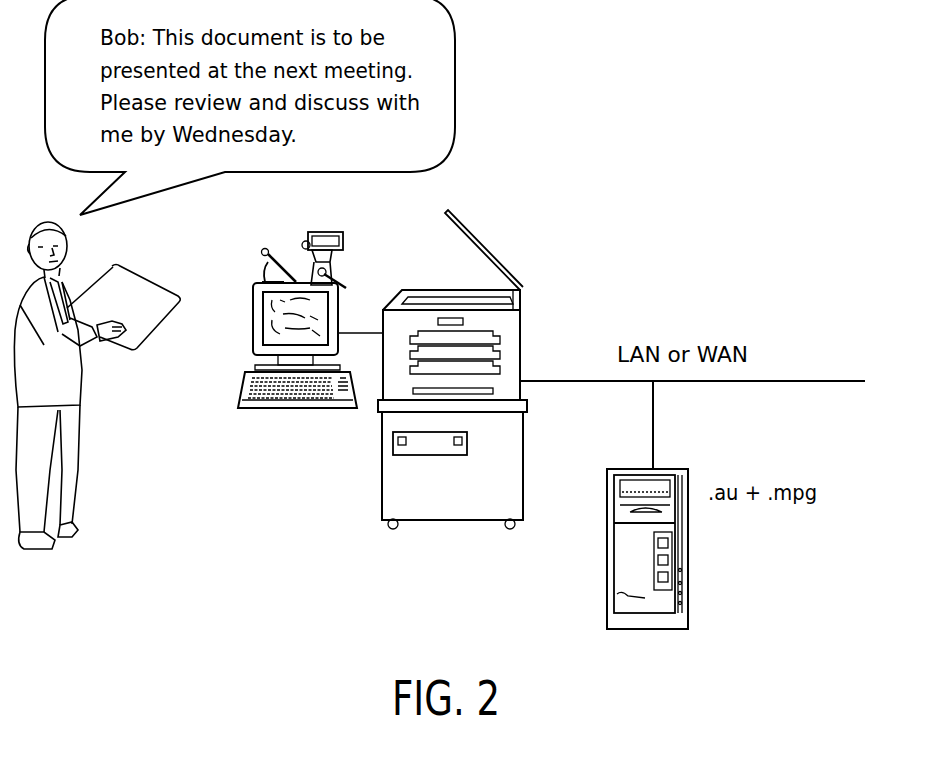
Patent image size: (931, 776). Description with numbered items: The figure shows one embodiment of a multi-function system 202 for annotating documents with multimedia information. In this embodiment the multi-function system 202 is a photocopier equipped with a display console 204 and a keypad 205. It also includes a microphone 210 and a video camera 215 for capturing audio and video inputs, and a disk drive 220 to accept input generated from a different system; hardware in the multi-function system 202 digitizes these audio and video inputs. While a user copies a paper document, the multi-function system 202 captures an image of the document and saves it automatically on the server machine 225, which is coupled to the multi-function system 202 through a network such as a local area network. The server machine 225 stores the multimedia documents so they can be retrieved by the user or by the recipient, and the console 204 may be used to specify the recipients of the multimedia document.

The multi-function system 202 is at (378, 430).
The display console 204 is at (253, 336).
The keypad 205 is at (288, 411).
The microphone 210 is at (261, 251).
The video camera 215 is at (347, 248).
The disk drive 220 is at (316, 410).
The server machine 225 is at (692, 581).